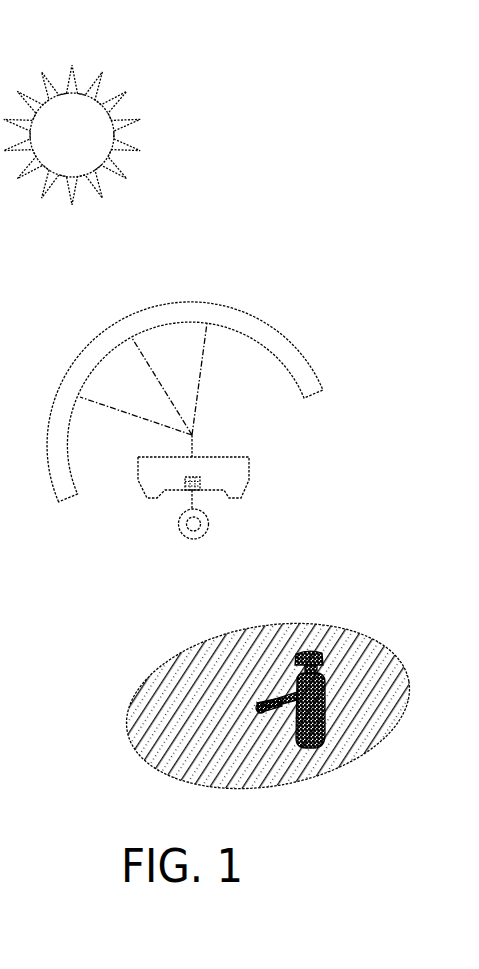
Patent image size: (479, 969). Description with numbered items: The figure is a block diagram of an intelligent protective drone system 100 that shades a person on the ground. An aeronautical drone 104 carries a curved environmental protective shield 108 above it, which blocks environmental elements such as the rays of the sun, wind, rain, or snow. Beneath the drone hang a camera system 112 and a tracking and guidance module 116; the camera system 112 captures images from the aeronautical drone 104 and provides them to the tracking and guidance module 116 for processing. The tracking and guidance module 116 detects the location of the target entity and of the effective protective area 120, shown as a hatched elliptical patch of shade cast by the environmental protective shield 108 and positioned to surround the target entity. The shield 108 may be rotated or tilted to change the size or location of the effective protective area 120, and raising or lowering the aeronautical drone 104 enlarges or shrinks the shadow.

The intelligent protective drone system 100 is at (239, 389).
The environmental protective shield 108 is at (321, 315).
The aeronautical drone 104 is at (291, 454).
The tracking and guidance module 116 is at (224, 479).
The camera system 112 is at (236, 524).
The effective protective area 120 is at (382, 600).